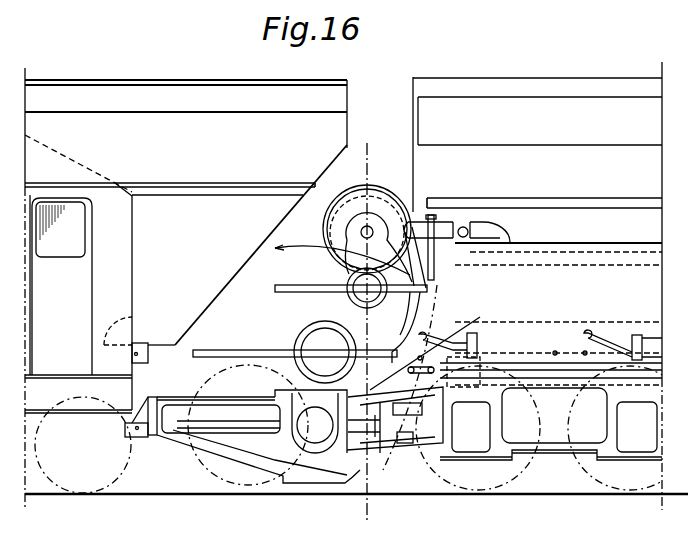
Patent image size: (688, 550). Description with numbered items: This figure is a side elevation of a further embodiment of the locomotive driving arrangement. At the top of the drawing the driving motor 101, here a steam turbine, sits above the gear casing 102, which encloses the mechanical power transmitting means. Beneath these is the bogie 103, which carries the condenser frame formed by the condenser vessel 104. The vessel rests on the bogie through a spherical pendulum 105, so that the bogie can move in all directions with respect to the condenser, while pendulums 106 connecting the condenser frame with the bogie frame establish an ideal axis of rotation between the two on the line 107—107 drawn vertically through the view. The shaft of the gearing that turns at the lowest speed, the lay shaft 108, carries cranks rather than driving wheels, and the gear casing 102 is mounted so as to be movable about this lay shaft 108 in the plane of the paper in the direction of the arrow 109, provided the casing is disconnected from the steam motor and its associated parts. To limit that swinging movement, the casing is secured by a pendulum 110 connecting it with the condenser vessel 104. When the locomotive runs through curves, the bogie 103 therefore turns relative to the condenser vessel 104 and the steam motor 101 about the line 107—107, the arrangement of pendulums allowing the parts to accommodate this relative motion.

The driving motor 101 is at (382, 188).
The gear casing 102 is at (272, 322).
The bogie 103 is at (172, 434).
The condenser vessel 104 is at (533, 286).
The spherical pendulum 105 is at (402, 445).
The pendulums 106 is at (433, 347).
The line of rotation 107 is at (369, 338).
The lay shaft 108 is at (315, 442).
The arrow 109 is at (277, 248).
The pendulum 110 is at (448, 242).